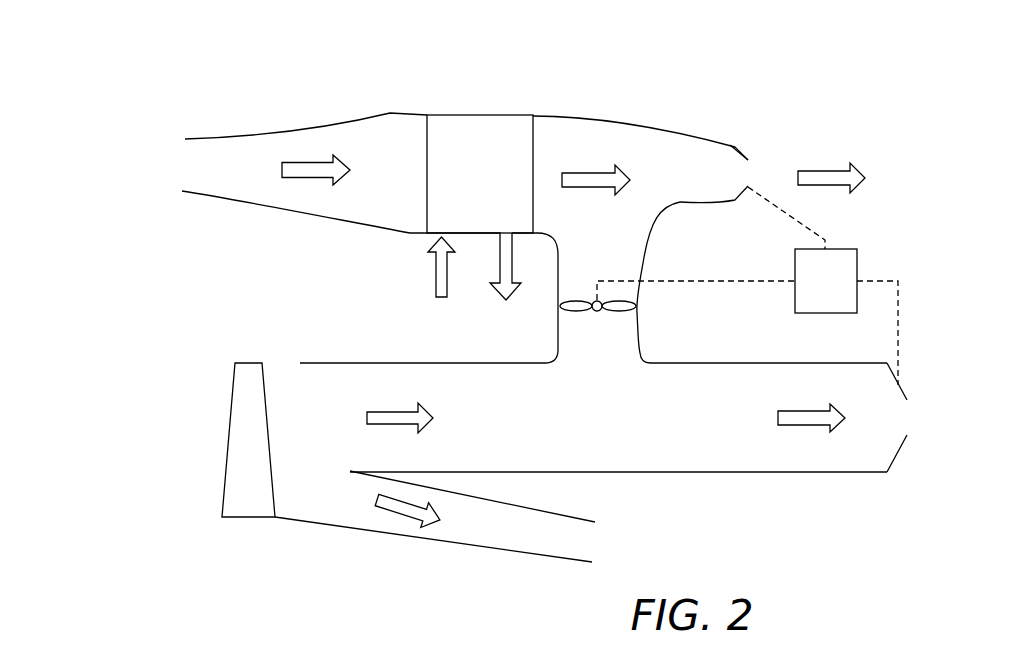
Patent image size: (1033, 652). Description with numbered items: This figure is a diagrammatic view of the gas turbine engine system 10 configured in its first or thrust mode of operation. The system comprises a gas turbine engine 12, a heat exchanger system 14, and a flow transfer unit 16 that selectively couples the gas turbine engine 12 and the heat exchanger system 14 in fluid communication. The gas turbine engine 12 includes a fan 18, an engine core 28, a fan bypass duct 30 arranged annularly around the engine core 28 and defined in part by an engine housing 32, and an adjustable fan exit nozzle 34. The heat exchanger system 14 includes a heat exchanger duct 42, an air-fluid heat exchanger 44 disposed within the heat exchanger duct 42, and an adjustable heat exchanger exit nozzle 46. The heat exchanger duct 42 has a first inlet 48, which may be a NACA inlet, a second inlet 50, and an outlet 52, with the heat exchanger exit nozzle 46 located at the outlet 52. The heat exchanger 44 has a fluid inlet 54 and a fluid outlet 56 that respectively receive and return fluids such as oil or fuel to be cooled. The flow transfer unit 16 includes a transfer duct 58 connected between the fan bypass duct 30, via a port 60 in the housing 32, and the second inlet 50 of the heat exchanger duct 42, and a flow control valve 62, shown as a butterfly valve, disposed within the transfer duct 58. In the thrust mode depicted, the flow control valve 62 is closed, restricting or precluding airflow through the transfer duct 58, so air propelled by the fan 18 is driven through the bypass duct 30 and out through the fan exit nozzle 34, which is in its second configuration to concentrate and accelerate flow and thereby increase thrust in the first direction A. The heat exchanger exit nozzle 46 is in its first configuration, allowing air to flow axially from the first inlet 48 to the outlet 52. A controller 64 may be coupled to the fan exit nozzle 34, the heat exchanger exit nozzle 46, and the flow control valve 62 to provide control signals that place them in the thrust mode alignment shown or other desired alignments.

The gas turbine engine system 10 is at (115, 128).
The gas turbine engine 12 is at (205, 355).
The heat exchanger system 14 is at (332, 93).
The flow transfer unit 16 is at (697, 268).
The fan 18 is at (235, 475).
The engine core 28 is at (472, 507).
The fan bypass duct 30 is at (520, 440).
The engine housing 32 is at (387, 363).
The fan exit nozzle 34 is at (900, 450).
The heat exchanger duct 42 is at (630, 125).
The heat exchanger 44 is at (467, 190).
The heat exchanger exit nozzle 46 is at (748, 162).
The first inlet 48 is at (198, 163).
The second inlet 50 is at (612, 252).
The outlet 52 is at (738, 175).
The fluid inlet 54 is at (436, 277).
The fluid outlet 56 is at (500, 258).
The transfer duct 58 is at (574, 256).
The port 60 is at (587, 370).
The flow control valve 62 is at (612, 312).
The controller 64 is at (813, 296).
The first direction A is at (807, 430).